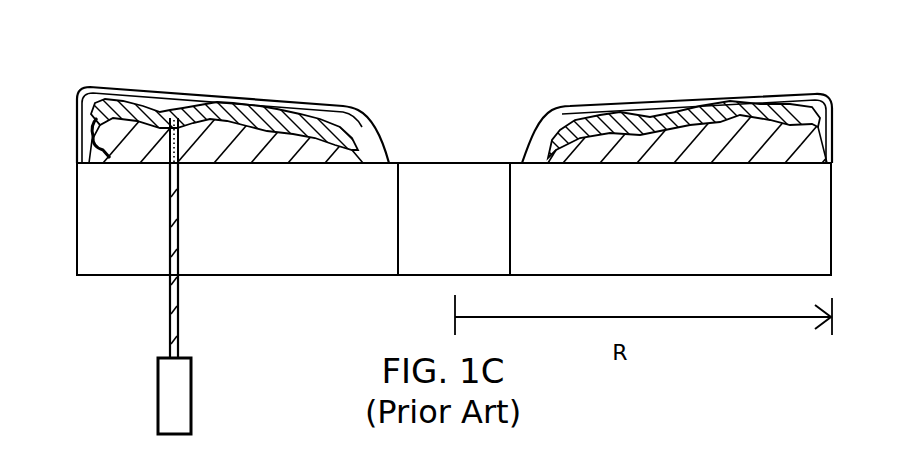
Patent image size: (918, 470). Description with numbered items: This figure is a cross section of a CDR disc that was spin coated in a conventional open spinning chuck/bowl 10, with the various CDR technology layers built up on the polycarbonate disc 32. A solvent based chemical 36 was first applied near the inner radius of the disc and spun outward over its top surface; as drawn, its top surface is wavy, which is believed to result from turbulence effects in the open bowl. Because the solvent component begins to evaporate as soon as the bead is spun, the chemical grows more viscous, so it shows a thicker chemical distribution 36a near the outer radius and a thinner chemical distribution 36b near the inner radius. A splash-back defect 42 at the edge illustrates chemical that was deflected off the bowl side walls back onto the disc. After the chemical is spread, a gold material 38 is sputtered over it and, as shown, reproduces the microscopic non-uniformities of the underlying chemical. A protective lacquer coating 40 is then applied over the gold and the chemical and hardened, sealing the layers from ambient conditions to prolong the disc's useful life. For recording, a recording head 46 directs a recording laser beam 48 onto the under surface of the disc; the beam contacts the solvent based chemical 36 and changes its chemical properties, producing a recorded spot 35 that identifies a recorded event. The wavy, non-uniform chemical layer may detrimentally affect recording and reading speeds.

The open spinning chuck/bowl 10 is at (770, 37).
The polycarbonate disc 32 is at (454, 219).
The recorded spot 35 is at (169, 148).
The solvent based chemical 36 is at (472, 129).
The thicker chemical distribution 36a is at (113, 140).
The thinner chemical distribution 36b is at (338, 148).
The gold material 38 is at (310, 117).
The protective lacquer coating 40 is at (247, 106).
The splash-back defect 42 is at (103, 123).
The recording head 46 is at (193, 393).
The recording laser beam 48 is at (180, 303).